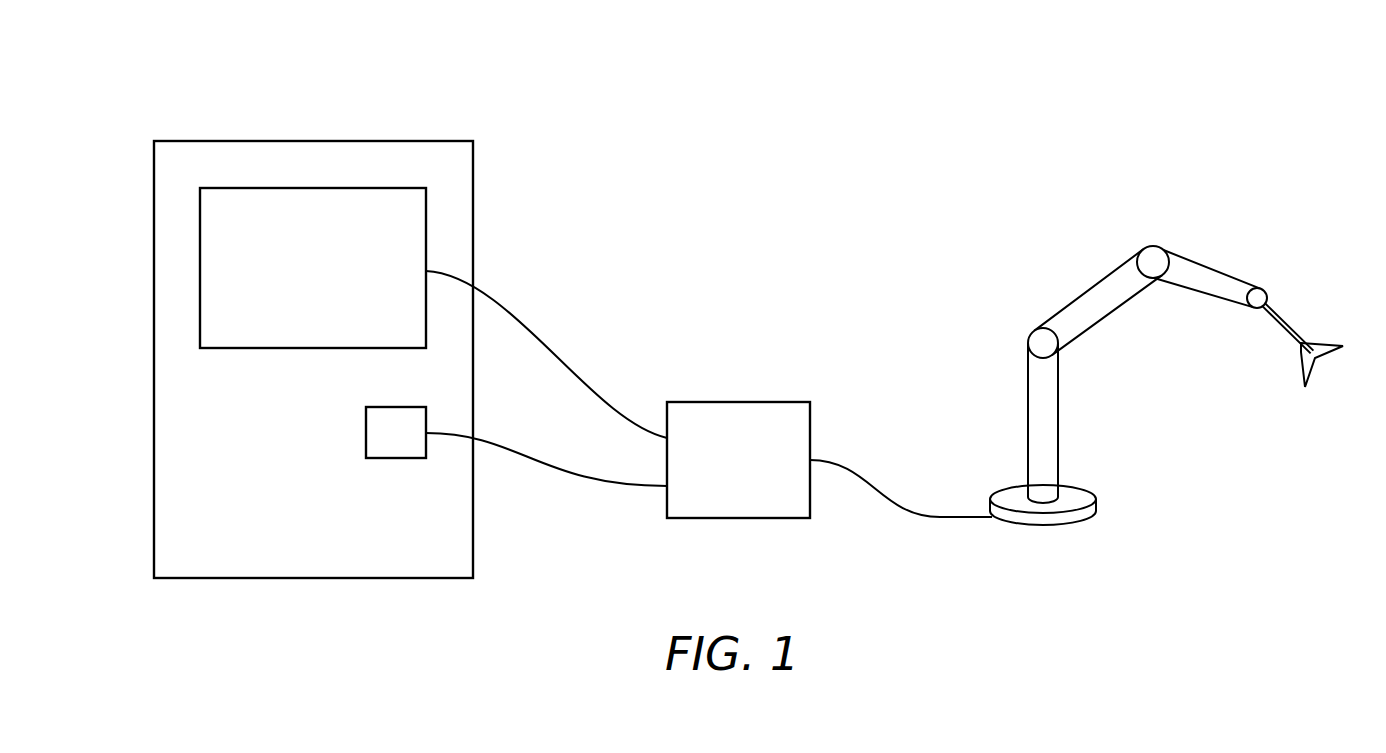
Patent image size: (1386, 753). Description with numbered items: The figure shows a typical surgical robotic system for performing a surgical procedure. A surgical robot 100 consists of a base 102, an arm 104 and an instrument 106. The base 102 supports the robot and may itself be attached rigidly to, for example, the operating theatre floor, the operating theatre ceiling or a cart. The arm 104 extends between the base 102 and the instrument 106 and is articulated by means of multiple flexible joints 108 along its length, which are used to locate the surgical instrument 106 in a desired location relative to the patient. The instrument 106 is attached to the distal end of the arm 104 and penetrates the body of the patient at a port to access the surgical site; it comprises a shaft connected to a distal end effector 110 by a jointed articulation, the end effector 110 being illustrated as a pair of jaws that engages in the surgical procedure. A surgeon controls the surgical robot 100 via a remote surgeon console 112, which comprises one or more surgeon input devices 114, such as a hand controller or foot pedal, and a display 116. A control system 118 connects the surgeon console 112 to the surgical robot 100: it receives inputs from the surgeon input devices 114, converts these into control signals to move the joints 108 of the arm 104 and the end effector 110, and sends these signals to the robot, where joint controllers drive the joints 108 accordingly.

The surgical robot 100 is at (1048, 231).
The base 102 is at (1097, 502).
The arm 104 is at (1114, 323).
The instrument 106 is at (1296, 318).
The flexible joints 108 is at (1036, 332).
The end effector 110 is at (1310, 374).
The surgeon console 112 is at (434, 104).
The surgeon input devices 114 is at (366, 420).
The display 116 is at (200, 203).
The control system 118 is at (780, 518).